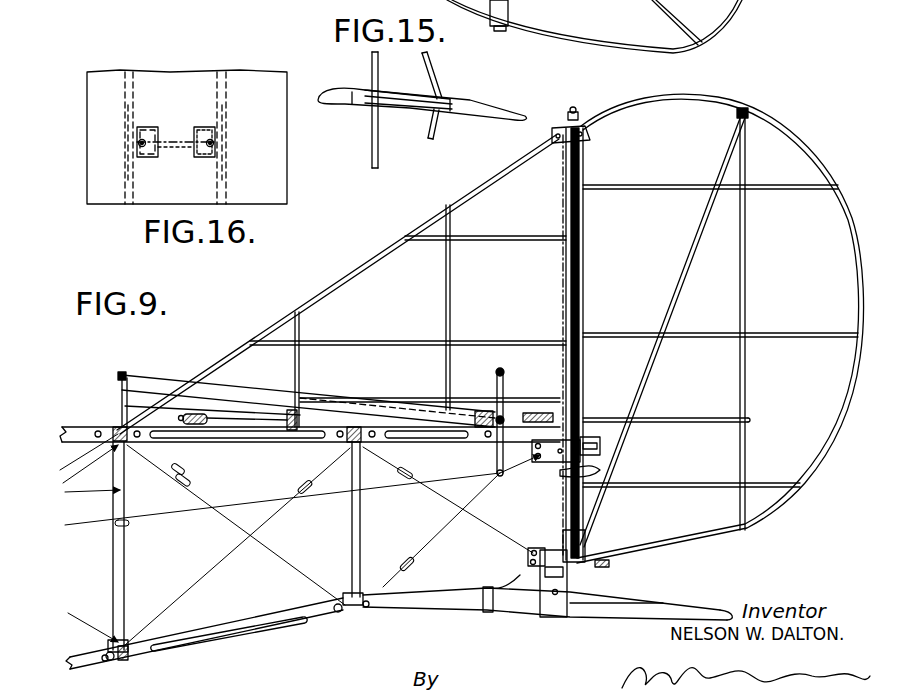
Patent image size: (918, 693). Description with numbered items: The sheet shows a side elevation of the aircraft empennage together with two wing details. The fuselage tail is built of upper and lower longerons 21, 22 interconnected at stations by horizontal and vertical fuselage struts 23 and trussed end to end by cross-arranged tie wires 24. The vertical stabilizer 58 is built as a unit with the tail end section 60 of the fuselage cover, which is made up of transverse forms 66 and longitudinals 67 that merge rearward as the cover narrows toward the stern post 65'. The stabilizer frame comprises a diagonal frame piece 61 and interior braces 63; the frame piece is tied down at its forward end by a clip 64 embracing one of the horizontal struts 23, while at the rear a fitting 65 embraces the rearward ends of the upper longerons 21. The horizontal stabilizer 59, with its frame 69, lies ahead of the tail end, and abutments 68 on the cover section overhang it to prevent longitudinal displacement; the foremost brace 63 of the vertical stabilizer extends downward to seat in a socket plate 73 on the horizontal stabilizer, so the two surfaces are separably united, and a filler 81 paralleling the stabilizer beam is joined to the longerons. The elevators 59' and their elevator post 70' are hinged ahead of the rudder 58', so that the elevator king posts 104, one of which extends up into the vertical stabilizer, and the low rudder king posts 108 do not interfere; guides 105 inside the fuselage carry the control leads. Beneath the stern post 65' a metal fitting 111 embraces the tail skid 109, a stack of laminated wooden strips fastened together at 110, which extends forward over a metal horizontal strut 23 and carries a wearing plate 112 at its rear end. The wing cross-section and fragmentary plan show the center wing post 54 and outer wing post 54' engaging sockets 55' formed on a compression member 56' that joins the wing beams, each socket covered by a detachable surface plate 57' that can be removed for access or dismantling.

In FIG. 9, the upper longeron 21 is at (288, 443).
In FIG. 9, the lower longeron 22 is at (227, 640).
In FIG. 9, the fuselage strut 23 is at (126, 583).
In FIG. 9, the tie wire 24 is at (281, 560).
In FIG. 16, the center wing post 54 is at (123, 145).
In FIG. 15, the center wing post 54 is at (355, 109).
In FIG. 16, the wing post 54' is at (234, 145).
In FIG. 15, the wing post 54' is at (455, 95).
In FIG. 15, the socket 55' is at (352, 123).
In FIG. 16, the compression member 56' is at (176, 130).
In FIG. 15, the compression member 56' is at (409, 124).
In FIG. 16, the detachable surface plate 57' is at (179, 169).
In FIG. 15, the detachable surface plate 57' is at (409, 78).
In FIG. 9, the vertical stabilizer 58 is at (338, 284).
In FIG. 9, the rudder 58' is at (720, 324).
In FIG. 9, the horizontal stabilizer 59 is at (226, 368).
In FIG. 9, the elevator 59' is at (666, 401).
In FIG. 9, the tail end section 60 is at (130, 371).
In FIG. 9, the diagonal frame piece 61 is at (479, 188).
In FIG. 9, the interior brace 63 is at (479, 241).
In FIG. 9, the clip 64 is at (116, 428).
In FIG. 9, the fitting 65 is at (588, 333).
In FIG. 9, the stern post 65' is at (663, 330).
In FIG. 9, the transverse form 66 is at (121, 378).
In FIG. 9, the longitudinal 67 is at (157, 385).
In FIG. 9, the abutment 68 is at (170, 472).
In FIG. 9, the frame 69 is at (185, 426).
In FIG. 9, the elevator post 70' is at (521, 424).
In FIG. 9, the socket plate 73 is at (345, 412).
In FIG. 9, the filler 81 is at (279, 413).
In FIG. 9, the king post 104 is at (502, 371).
In FIG. 9, the guide 105 is at (126, 526).
In FIG. 9, the king post 108 is at (580, 470).
In FIG. 9, the tail skid 109 is at (610, 622).
In FIG. 9, the fastening 110 is at (493, 608).
In FIG. 9, the metal fitting 111 is at (568, 585).
In FIG. 9, the wearing plate 112 is at (718, 611).